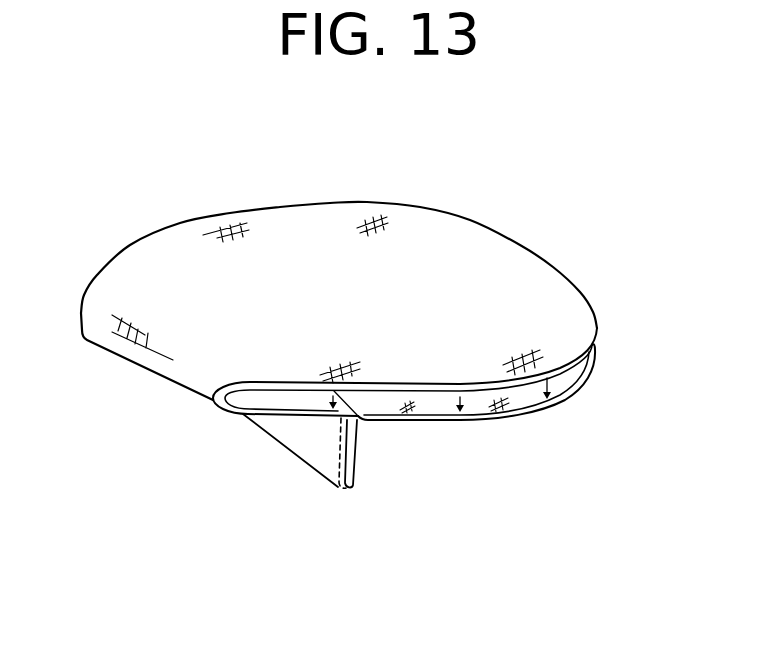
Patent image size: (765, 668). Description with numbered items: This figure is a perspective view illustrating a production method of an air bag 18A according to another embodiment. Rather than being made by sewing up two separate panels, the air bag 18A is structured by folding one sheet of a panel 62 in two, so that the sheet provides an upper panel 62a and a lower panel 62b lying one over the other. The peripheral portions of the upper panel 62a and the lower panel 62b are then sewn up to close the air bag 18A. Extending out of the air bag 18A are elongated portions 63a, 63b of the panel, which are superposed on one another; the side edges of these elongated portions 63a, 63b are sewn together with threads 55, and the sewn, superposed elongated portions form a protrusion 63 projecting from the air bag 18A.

The air bag 18A is at (365, 339).
The panel 62 is at (365, 309).
The upper panel 62a is at (305, 222).
The lower panel 62b is at (535, 414).
The protrusion 63 is at (333, 485).
The elongated portion 63a is at (296, 437).
The elongated portion 63b is at (365, 440).
The threads 55 is at (333, 461).